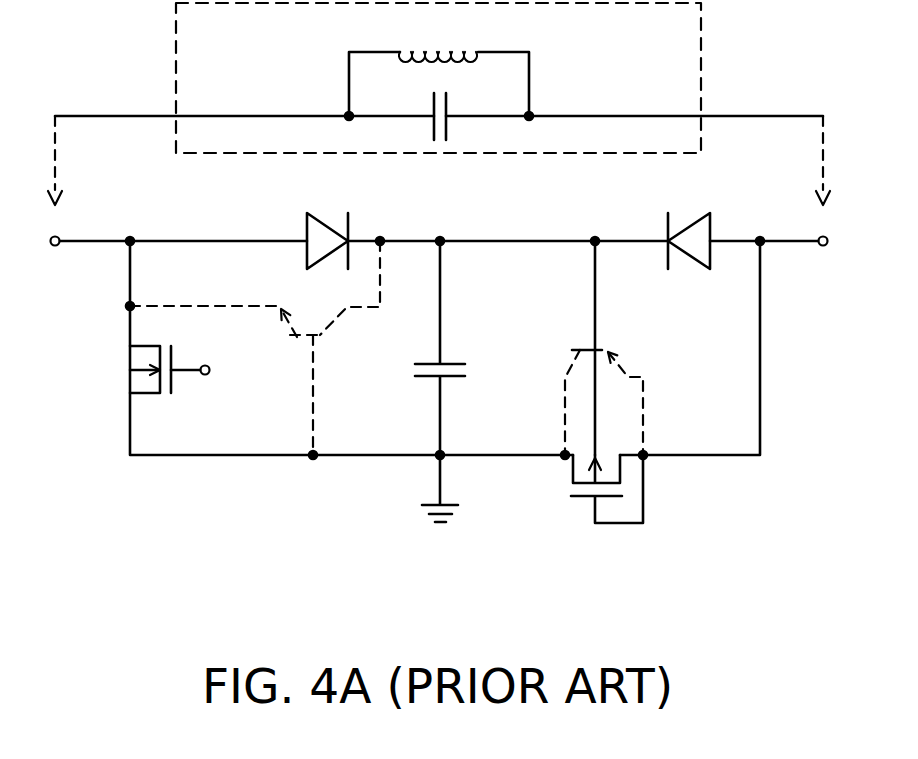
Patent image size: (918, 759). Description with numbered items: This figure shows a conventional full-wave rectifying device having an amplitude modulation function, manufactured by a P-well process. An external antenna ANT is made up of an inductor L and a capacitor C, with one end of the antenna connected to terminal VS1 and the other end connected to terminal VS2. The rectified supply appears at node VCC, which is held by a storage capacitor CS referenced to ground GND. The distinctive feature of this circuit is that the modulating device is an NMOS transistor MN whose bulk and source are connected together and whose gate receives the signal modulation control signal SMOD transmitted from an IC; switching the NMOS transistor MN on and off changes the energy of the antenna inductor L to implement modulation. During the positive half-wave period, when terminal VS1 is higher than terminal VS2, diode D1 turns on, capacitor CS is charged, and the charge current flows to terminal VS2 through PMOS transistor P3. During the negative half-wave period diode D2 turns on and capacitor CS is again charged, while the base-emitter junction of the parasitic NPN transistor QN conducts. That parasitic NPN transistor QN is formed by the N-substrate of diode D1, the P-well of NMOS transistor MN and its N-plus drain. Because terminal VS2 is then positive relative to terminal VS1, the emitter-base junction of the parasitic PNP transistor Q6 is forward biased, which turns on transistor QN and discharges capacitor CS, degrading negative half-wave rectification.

The external antenna ANT is at (468, 78).
The inductor L is at (438, 36).
The capacitor C is at (452, 110).
The terminal Vs1 VS1 is at (30, 241).
The terminal Vs2 VS2 is at (850, 242).
The supply voltage node VCC is at (438, 220).
The diode D1 is at (324, 219).
The diode D2 is at (689, 221).
The NMOS transistor MN is at (156, 393).
The signal modulation control signal SMOD is at (221, 371).
The parasitic NPN transistor QN is at (255, 348).
The capacitor Cs CS is at (457, 348).
The ground GND is at (440, 511).
The parasitic PNP transistor Q6 is at (605, 348).
The PMOS transistor P3 is at (609, 511).